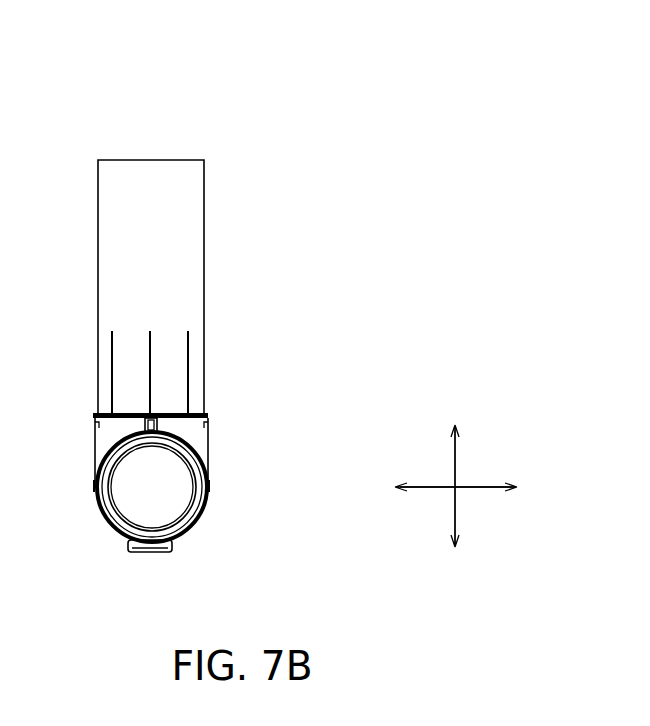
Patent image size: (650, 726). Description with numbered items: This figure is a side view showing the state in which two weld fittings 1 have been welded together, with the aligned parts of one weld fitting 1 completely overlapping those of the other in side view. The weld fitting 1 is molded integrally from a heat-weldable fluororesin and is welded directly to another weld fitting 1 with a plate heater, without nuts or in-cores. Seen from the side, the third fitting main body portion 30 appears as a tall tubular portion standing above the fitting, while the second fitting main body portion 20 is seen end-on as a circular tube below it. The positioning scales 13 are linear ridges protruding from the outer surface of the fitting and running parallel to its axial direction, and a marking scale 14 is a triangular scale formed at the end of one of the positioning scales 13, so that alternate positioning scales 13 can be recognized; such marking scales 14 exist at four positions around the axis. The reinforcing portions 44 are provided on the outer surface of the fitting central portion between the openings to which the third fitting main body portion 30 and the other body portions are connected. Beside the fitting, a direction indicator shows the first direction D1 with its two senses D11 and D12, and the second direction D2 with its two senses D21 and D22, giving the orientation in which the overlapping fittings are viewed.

The weld fitting 1 is at (109, 95).
The third fitting main body portion 30 is at (176, 141).
The positioning scales 13 is at (190, 342).
The marking scales 14 is at (158, 406).
The reinforcing portions 44 is at (143, 421).
The second fitting main body portion 20 is at (215, 453).
The first direction D1 is at (475, 490).
The second direction D2 is at (453, 470).
The first direction side D11 is at (400, 490).
The first direction other side D12 is at (509, 490).
The second direction side D21 is at (455, 445).
The second direction other side D22 is at (455, 532).